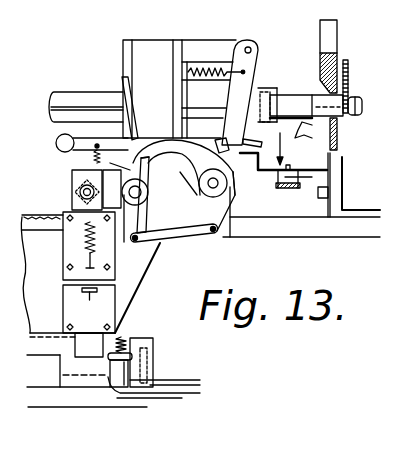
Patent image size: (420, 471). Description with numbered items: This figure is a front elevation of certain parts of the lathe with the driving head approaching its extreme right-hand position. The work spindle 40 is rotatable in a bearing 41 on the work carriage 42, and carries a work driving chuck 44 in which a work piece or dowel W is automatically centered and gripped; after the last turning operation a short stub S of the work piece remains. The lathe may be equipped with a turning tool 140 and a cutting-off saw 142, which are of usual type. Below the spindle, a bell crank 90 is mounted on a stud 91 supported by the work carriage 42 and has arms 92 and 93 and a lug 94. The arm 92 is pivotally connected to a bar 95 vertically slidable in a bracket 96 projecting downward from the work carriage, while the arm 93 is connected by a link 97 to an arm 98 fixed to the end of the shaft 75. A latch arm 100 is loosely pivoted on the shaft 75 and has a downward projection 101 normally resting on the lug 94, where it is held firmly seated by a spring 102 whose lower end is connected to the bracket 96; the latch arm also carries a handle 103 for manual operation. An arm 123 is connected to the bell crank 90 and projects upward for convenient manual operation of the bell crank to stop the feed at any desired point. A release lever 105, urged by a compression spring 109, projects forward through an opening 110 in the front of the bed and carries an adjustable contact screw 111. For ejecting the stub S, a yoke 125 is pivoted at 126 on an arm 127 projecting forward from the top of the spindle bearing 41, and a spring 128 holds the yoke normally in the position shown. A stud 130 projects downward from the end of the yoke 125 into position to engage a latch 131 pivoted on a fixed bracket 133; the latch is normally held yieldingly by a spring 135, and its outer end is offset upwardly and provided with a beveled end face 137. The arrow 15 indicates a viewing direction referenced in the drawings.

The bearing 41 is at (145, 45).
The arm 127 is at (202, 43).
The work driving chuck 44 is at (196, 106).
The spring 128 is at (199, 64).
The yoke 125 is at (256, 69).
The pivot 126 is at (251, 48).
The stud 130 is at (214, 150).
The beveled end face 137 is at (256, 136).
The arm 123 is at (130, 110).
The work spindle 40 is at (82, 98).
The short stub S is at (287, 100).
The cutting-off saw 142 is at (348, 68).
The work piece W is at (363, 106).
The turning tool 140 is at (312, 133).
The direction arrow 15 is at (290, 149).
The latch 131 is at (323, 165).
The fixed bracket 133 is at (312, 178).
The spring 135 is at (288, 189).
The work carriage 42 is at (224, 237).
The bell crank 90 is at (152, 203).
The arm 93 is at (143, 220).
The lug 94 is at (143, 170).
The stud 91 is at (147, 192).
The shaft 75 is at (228, 184).
The arm 98 is at (220, 205).
The link 97 is at (176, 239).
The handle 103 is at (57, 146).
The latch arm 100 is at (112, 142).
The downward projection 101 is at (145, 146).
The arm 92 is at (128, 171).
The bar 95 is at (72, 186).
The spring 102 is at (82, 241).
The bracket 96 is at (107, 306).
The release lever 105 is at (93, 376).
The opening 110 is at (115, 407).
The compression spring 109 is at (150, 341).
The adjustable contact screw 111 is at (153, 371).